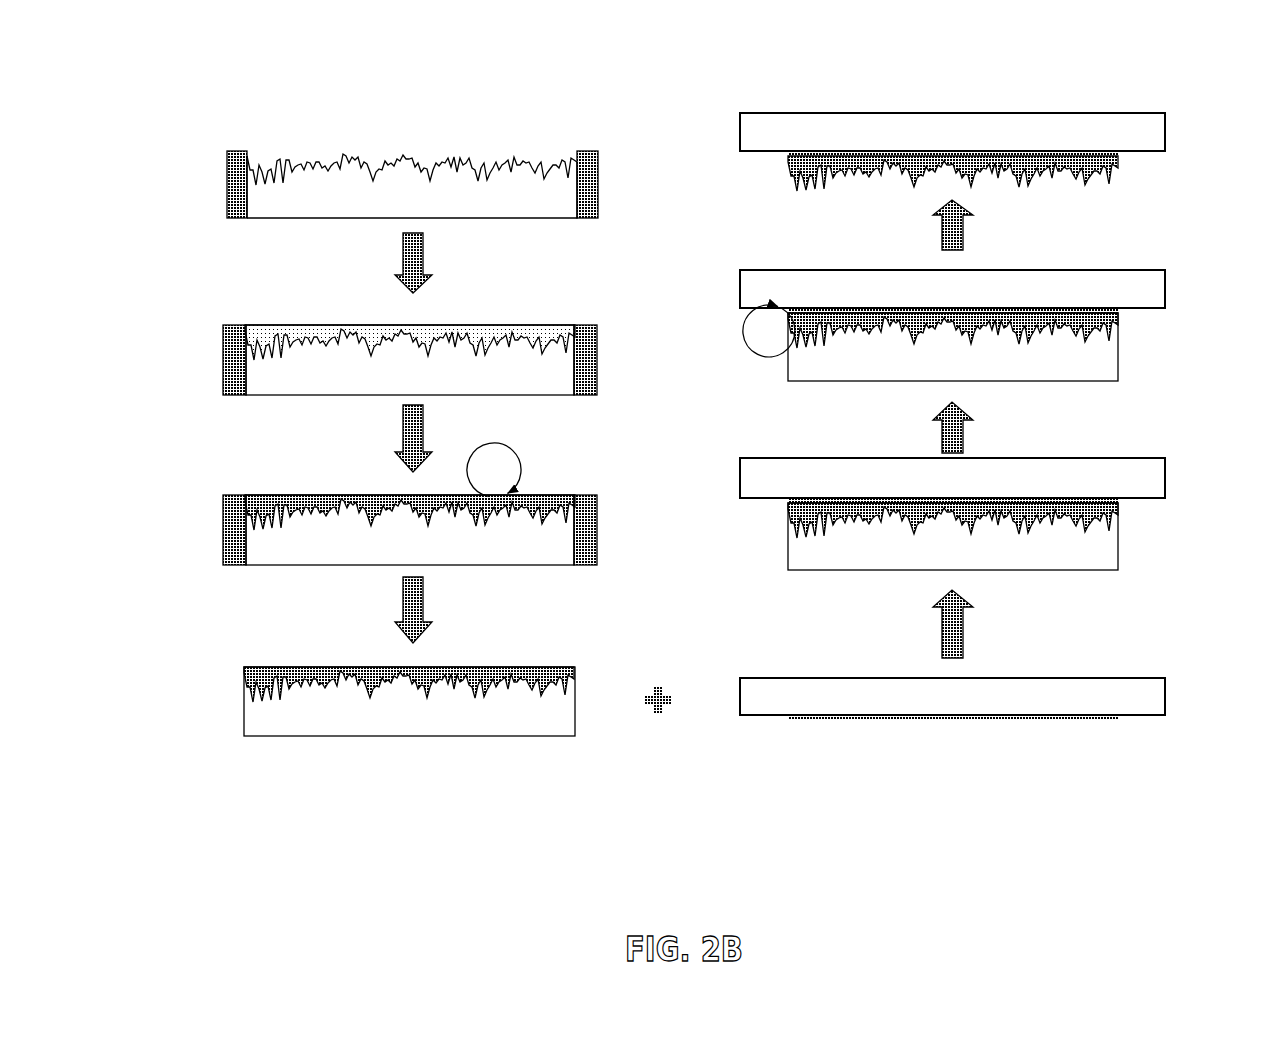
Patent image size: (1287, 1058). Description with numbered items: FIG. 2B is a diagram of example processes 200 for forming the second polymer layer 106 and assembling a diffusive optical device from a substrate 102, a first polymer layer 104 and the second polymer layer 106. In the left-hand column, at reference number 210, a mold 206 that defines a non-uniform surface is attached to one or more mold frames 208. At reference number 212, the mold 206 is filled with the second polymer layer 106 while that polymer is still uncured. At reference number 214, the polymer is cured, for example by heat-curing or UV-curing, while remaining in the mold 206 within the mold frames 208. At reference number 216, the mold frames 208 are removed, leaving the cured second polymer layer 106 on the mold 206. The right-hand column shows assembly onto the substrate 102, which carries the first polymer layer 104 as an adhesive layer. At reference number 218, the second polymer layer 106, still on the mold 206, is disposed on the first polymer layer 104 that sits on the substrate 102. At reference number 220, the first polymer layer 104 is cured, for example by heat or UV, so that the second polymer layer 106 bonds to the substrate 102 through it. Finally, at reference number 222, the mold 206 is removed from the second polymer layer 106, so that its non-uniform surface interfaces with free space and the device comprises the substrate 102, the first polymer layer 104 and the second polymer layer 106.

The example processes 200 is at (200, 68).
The substrate 102 is at (934, 143).
The first polymer layer 104 is at (1100, 153).
The second polymer layer 106 is at (272, 332).
The mold 206 is at (280, 198).
The mold frames 208 is at (237, 172).
The step of attaching the mold to mold frames 210 is at (412, 133).
The step of filling the mold 212 is at (413, 279).
The step of curing the polymer 214 is at (454, 453).
The step of removing the mold frames 216 is at (409, 622).
The step of bonding the polymer to the substrate 218 is at (952, 614).
The step of curing the adhesive layer 220 is at (858, 379).
The step of removing the mold 222 is at (952, 213).